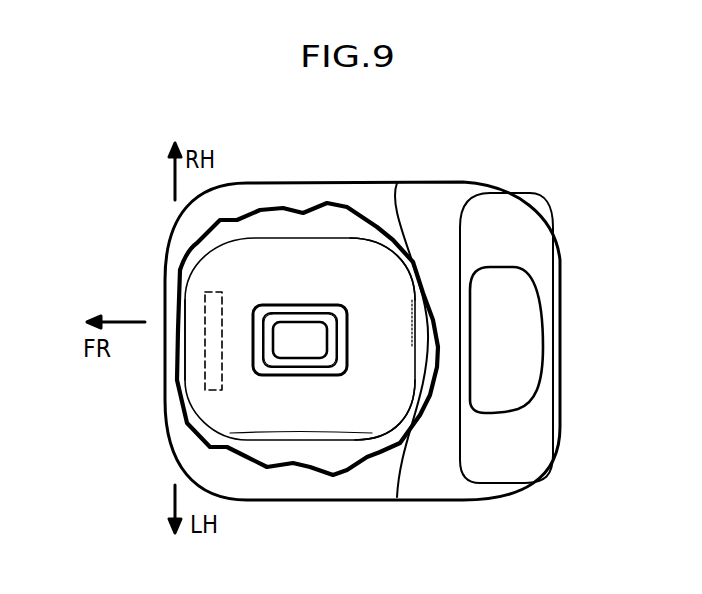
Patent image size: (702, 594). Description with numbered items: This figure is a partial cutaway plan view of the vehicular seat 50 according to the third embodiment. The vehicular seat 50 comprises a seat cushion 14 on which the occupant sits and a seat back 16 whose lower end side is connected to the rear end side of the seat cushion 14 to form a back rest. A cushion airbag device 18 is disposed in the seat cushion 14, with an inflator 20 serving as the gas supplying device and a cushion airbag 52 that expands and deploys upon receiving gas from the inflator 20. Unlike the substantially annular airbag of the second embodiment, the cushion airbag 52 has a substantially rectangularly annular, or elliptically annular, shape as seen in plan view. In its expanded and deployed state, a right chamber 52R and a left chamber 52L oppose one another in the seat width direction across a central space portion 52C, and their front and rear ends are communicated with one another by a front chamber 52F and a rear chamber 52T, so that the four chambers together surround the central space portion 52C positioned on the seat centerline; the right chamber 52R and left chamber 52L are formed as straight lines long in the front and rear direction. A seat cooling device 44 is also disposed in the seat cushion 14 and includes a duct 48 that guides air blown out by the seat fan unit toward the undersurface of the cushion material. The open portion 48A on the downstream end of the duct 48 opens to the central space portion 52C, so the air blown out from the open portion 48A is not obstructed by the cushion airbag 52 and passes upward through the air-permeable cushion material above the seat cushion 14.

The vehicular seat 50 is at (381, 167).
The seat cushion 14 is at (397, 182).
The seat back 16 is at (460, 181).
The cushion airbag device 18 is at (234, 222).
The inflator 20 is at (213, 358).
The cushion airbag 52 is at (295, 234).
The right chamber 52R is at (285, 262).
The left chamber 52L is at (325, 413).
The front chamber 52F is at (237, 328).
The rear chamber 52T is at (378, 352).
The central space portion 52C is at (364, 270).
The duct 48 is at (308, 370).
The seat cooling device 44 is at (310, 445).
The open portion 48A is at (299, 357).